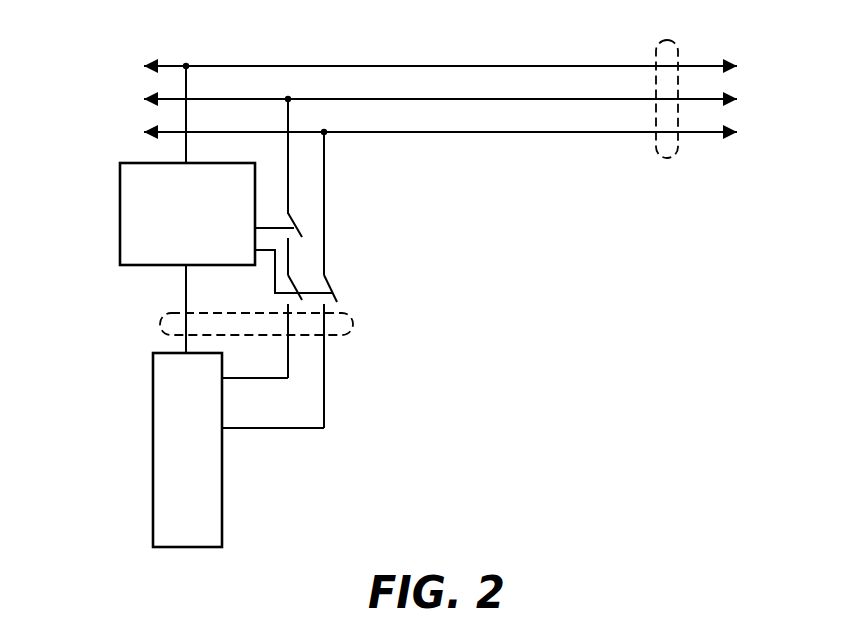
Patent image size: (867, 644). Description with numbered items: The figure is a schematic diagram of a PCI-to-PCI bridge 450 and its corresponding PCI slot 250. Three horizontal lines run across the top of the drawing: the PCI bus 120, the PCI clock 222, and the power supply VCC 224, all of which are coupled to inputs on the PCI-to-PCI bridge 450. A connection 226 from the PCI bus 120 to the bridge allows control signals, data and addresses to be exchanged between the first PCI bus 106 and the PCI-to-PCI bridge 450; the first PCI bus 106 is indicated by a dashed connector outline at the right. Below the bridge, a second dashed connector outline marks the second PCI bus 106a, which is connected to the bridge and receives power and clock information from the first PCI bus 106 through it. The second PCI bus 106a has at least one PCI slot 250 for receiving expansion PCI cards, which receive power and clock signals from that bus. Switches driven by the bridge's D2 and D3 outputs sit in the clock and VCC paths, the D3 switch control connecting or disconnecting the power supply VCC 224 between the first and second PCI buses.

The PCI bus 120 is at (712, 66).
The PCI clock 222 is at (712, 98).
The power supply VCC 224 is at (712, 131).
The first PCI bus 106 is at (668, 158).
The second PCI bus 106a is at (160, 325).
The connection 226 is at (186, 84).
The PCI-to-PCI bridge 450 is at (120, 200).
The PCI slot 250 is at (153, 426).